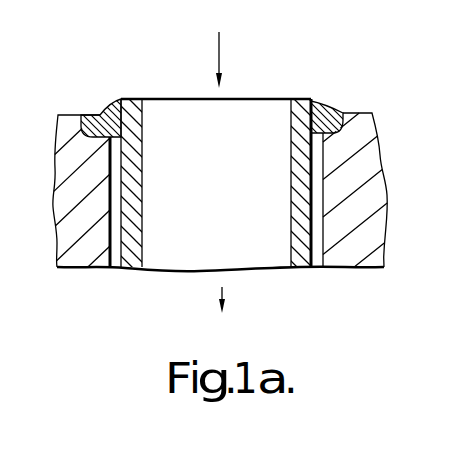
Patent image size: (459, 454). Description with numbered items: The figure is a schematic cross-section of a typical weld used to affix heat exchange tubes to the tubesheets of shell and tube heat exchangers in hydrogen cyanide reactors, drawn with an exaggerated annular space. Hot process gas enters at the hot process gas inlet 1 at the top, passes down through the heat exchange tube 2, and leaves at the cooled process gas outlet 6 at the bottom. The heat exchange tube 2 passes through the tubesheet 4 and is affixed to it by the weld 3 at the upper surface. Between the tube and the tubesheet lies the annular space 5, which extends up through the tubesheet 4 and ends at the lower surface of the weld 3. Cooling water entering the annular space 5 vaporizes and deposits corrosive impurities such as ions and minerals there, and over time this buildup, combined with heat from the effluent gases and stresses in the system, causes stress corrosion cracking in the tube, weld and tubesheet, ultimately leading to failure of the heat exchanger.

The hot process gas inlet 1 is at (219, 23).
The heat exchange tube 2 is at (144, 251).
The weld 3 is at (328, 108).
The tubesheet 4 is at (390, 208).
The annular space 5 is at (320, 255).
The cooled process gas outlet 6 is at (222, 320).